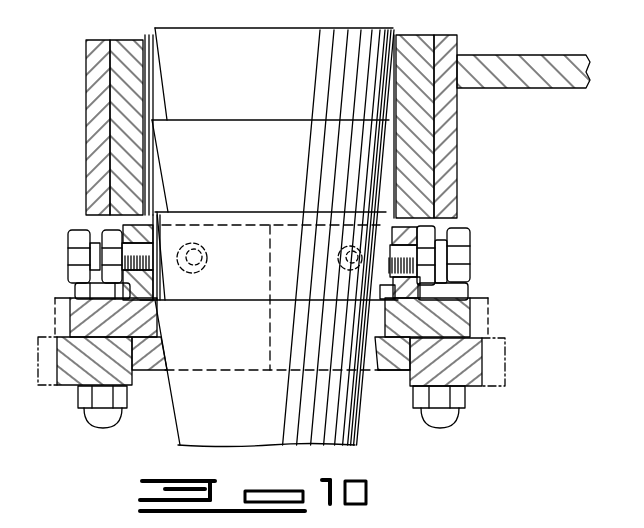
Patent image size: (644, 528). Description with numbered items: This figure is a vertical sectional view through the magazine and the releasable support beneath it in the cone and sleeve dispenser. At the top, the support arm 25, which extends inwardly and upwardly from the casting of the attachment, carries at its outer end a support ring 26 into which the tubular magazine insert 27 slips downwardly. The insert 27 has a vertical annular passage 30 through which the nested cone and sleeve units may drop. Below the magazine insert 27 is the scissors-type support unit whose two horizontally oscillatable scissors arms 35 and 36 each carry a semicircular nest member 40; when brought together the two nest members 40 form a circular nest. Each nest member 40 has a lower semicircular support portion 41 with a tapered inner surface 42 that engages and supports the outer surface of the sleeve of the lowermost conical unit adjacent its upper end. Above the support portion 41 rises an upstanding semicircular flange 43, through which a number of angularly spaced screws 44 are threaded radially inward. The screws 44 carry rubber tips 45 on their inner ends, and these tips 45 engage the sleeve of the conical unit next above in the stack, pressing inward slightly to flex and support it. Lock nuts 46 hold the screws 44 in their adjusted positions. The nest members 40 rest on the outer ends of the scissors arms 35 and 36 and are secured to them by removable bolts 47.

The support arm 25 is at (532, 64).
The support ring 26 is at (450, 148).
The magazine insert 27 is at (425, 113).
The vertical annular passage 30 is at (392, 54).
The scissors arm 35 is at (476, 356).
The scissors arm 36 is at (74, 380).
The nest member 40 is at (478, 300).
The lower semicircular support portion 41 is at (393, 360).
The tapered inner surface 42 is at (386, 333).
The upstanding semicircular flange 43 is at (418, 225).
The screws 44 is at (75, 238).
The rubber tips 45 is at (356, 250).
The lock nuts 46 is at (432, 262).
The removable bolts 47 is at (75, 290).